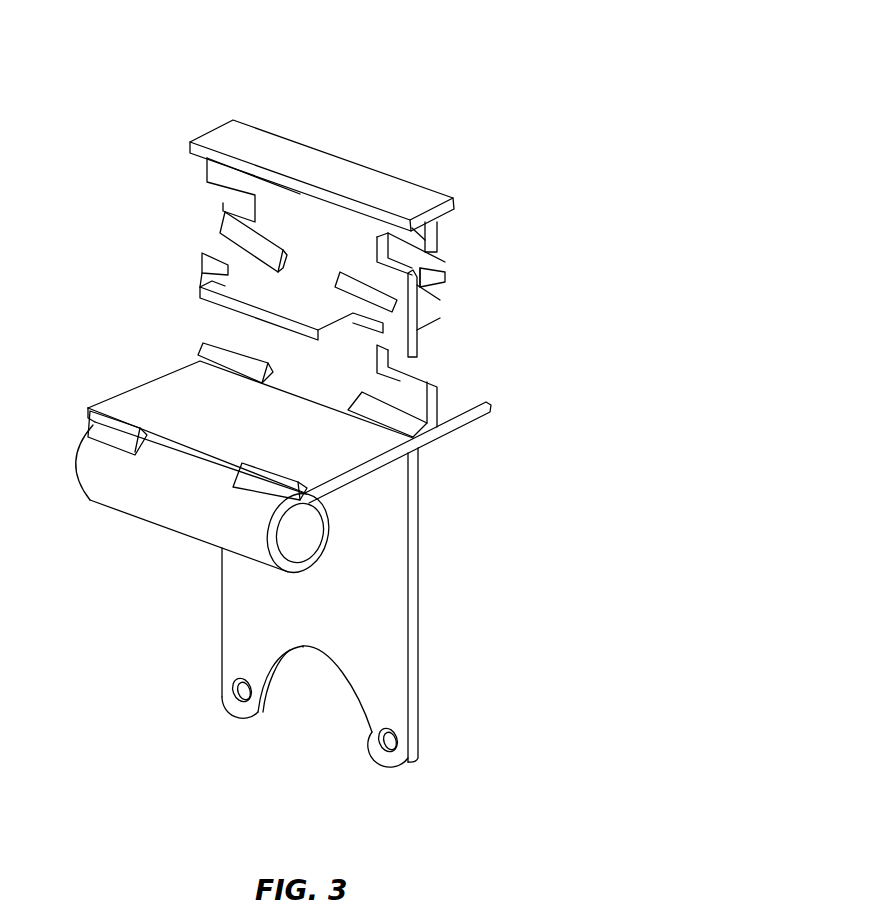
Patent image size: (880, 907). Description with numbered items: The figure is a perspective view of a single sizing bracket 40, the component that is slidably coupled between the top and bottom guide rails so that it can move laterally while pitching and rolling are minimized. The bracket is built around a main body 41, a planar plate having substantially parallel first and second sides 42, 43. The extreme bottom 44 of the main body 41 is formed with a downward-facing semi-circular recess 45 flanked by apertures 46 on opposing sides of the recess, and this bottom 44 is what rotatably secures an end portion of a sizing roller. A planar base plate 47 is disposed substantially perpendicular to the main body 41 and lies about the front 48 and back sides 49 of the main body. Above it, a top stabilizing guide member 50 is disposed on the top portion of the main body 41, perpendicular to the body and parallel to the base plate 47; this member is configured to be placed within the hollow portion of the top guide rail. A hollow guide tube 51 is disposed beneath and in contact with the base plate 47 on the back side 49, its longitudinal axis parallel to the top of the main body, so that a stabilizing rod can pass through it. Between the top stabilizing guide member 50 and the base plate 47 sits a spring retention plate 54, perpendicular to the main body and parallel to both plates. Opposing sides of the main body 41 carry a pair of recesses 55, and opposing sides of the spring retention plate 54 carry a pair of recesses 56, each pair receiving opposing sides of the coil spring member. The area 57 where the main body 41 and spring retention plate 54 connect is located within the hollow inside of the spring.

The sizing bracket 40 is at (480, 116).
The main body 41 is at (395, 477).
The first side 42 is at (418, 618).
The second side 43 is at (222, 593).
The bottom 44 is at (368, 690).
The semi-circular recess 45 is at (315, 673).
The apertures 46 is at (235, 693).
The planar base plate 47 is at (160, 392).
The front side 48 is at (460, 398).
The back side 49 is at (210, 330).
The top stabilizing guide member 50 is at (230, 130).
The hollow guide tube 51 is at (102, 487).
The spring retention plate 54 is at (200, 293).
The recesses 55 is at (220, 195).
The recesses 56 is at (195, 268).
The area 57 is at (420, 303).